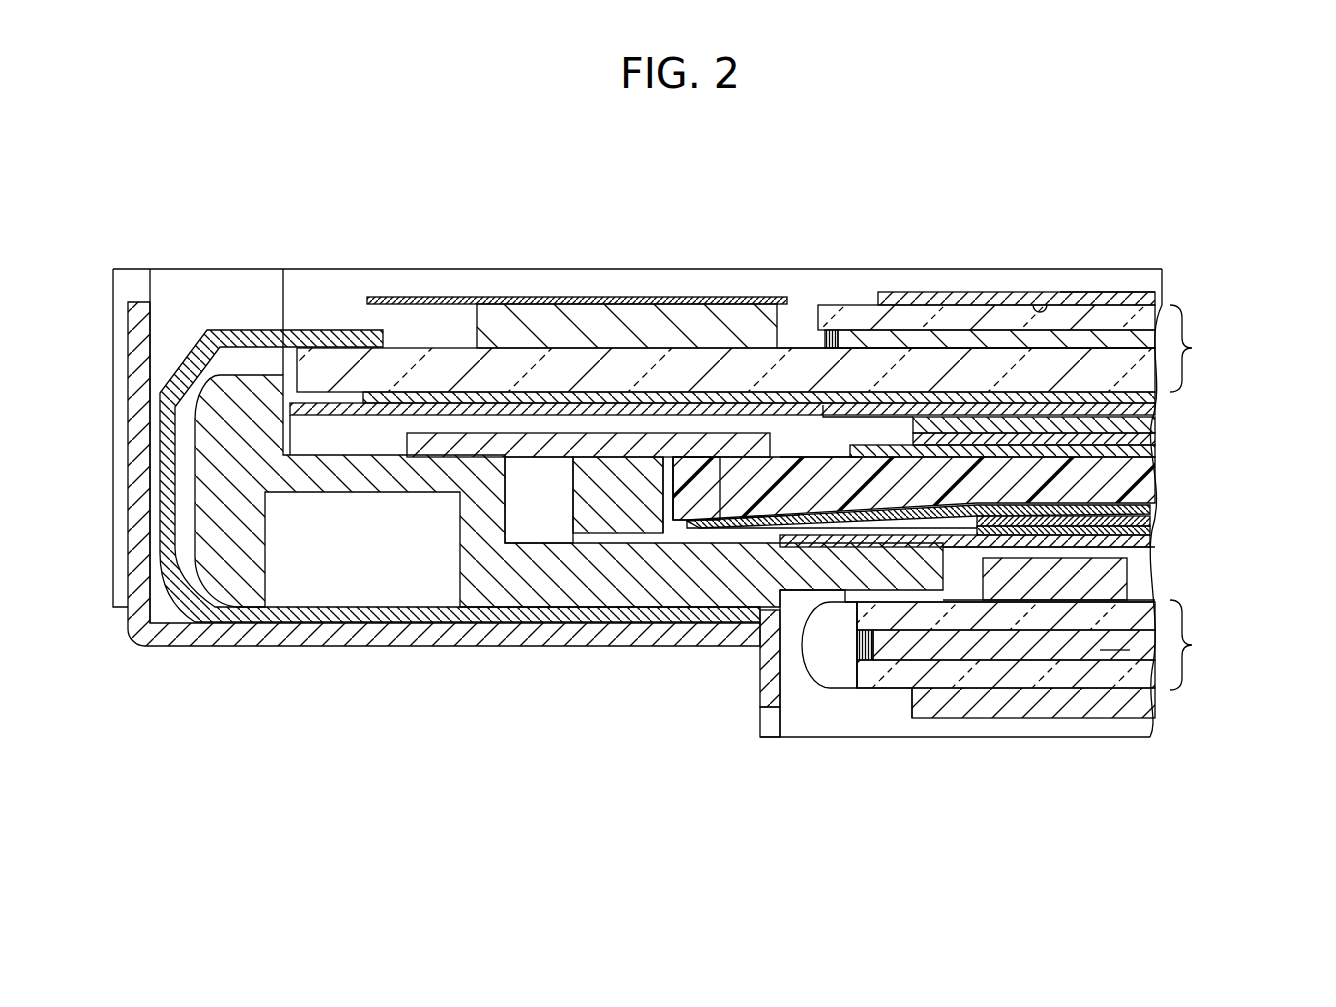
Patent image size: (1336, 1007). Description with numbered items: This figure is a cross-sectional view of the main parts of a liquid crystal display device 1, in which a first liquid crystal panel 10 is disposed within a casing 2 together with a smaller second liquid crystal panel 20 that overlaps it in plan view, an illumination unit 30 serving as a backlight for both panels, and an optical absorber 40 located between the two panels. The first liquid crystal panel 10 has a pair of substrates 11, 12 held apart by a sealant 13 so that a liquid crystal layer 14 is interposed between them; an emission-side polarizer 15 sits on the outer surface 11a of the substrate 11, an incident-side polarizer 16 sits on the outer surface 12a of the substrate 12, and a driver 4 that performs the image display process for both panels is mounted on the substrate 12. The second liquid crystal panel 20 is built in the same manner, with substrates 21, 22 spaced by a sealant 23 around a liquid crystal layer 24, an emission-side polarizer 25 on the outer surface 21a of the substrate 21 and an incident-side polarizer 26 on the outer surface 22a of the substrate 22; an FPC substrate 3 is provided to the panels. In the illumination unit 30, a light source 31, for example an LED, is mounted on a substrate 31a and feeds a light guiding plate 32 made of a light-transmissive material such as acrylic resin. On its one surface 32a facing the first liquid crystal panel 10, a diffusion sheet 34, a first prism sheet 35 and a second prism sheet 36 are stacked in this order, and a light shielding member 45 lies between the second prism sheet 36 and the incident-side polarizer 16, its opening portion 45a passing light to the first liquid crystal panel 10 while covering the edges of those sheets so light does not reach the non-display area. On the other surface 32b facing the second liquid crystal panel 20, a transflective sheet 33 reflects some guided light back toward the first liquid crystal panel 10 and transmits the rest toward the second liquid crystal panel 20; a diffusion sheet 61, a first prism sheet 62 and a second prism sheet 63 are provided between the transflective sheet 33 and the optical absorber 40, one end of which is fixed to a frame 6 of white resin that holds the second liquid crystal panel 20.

The liquid crystal display device 1 is at (1045, 168).
The casing 2 is at (268, 646).
The FPC substrate 3 is at (237, 330).
The driver 4 is at (528, 318).
The frame 6 is at (485, 595).
The first liquid crystal panel 10 is at (1199, 348).
The substrate 11 is at (892, 318).
The outer surface 11a is at (1040, 308).
The substrate 12 is at (800, 365).
The outer surface 12a is at (682, 390).
The sealant 13 is at (833, 338).
The liquid crystal layer 14 is at (935, 300).
The emission-side polarizer 15 is at (1122, 292).
The incident-side polarizer 16 is at (645, 300).
The second liquid crystal panel 20 is at (1004, 663).
The substrate 21 is at (900, 650).
The outer surface 21a is at (1047, 700).
The substrate 22 is at (888, 618).
The outer surface 22a is at (1107, 652).
The sealant 23 is at (862, 690).
The liquid crystal layer 24 is at (1000, 648).
The emission-side polarizer 25 is at (1090, 713).
The incident-side polarizer 26 is at (1127, 585).
The illumination unit 30 is at (565, 540).
The light source 31 is at (600, 512).
The substrate 31a is at (525, 457).
The light guiding plate 32 is at (645, 545).
The one surface 32a is at (820, 455).
The other surface 32b is at (750, 522).
The transflective sheet 33 is at (690, 530).
The diffusion sheet 34 is at (1145, 450).
The first prism sheet 35 is at (1145, 440).
The second prism sheet 36 is at (1145, 425).
The optical absorber 40 is at (1007, 546).
The light shielding member 45 is at (405, 403).
The opening portion 45a is at (965, 410).
The diffusion sheet 61 is at (1150, 515).
The first prism sheet 62 is at (1150, 525).
The second prism sheet 63 is at (1150, 535).